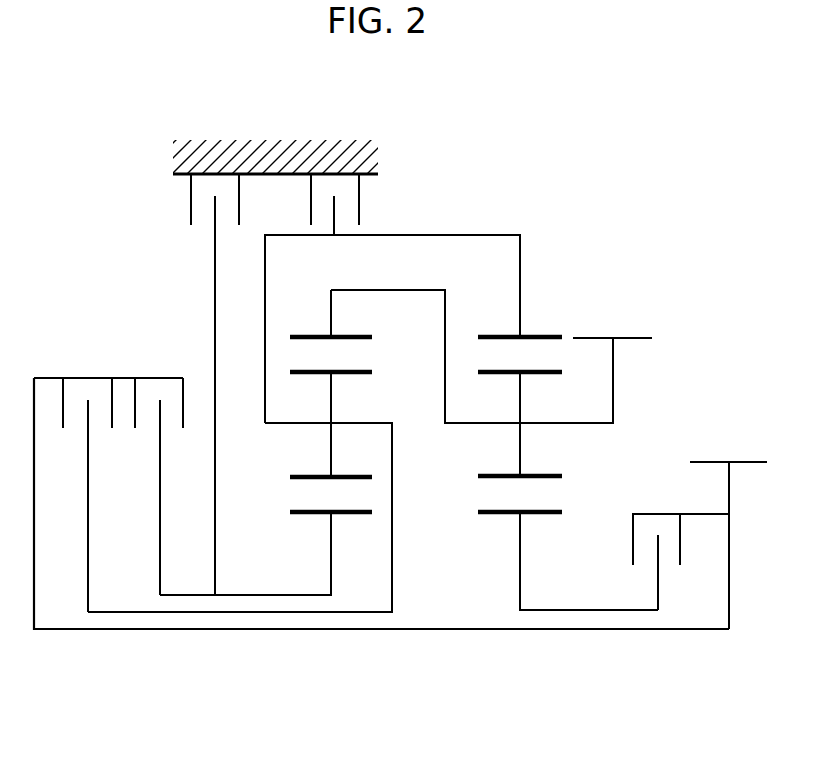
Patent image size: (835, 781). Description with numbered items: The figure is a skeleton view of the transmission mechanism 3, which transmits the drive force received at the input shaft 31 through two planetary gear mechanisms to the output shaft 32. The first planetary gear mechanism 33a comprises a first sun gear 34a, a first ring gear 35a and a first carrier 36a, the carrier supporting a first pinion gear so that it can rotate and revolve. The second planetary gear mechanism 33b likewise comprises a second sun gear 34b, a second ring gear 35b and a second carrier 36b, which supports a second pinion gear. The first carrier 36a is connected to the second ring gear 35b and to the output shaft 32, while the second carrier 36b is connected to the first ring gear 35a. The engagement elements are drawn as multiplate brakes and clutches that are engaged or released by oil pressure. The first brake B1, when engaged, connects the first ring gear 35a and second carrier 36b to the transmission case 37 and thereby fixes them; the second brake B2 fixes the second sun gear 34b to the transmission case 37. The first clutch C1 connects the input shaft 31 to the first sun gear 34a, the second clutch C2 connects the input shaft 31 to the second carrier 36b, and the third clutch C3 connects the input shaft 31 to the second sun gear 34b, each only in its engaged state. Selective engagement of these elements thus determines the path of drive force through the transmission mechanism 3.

The transmission mechanism 3 is at (568, 166).
The transmission case 37 is at (304, 152).
The input shaft 31 is at (746, 461).
The output shaft 32 is at (629, 336).
The first planetary gear mechanism 33a is at (546, 645).
The second planetary gear mechanism 33b is at (349, 642).
The first sun gear 34a is at (501, 516).
The second sun gear 34b is at (310, 516).
The first ring gear 35a is at (536, 334).
The second ring gear 35b is at (311, 334).
The first carrier 36a is at (522, 450).
The second carrier 36b is at (333, 398).
The first brake B1 is at (352, 204).
The second brake B2 is at (196, 384).
The first clutch C1 is at (681, 548).
The second clutch C2 is at (87, 481).
The third clutch C3 is at (108, 473).